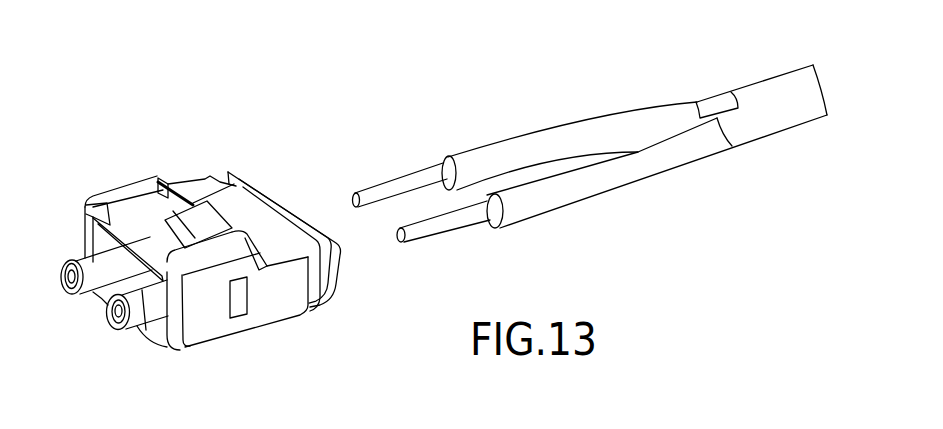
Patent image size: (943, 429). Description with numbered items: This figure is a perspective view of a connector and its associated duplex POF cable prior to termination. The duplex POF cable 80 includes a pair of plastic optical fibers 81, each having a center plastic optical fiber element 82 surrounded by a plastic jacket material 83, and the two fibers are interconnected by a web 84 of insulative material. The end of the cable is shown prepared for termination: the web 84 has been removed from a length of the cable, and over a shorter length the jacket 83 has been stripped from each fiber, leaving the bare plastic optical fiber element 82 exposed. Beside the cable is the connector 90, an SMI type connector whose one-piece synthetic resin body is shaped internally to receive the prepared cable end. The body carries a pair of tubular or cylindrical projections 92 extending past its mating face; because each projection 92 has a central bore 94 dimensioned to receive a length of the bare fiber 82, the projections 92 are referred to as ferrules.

The duplex POF cable 80 is at (776, 133).
The plastic optical fiber 81 is at (637, 168).
The plastic optical fiber element 82 is at (378, 187).
The plastic jacket material 83 is at (440, 164).
The web 84 is at (738, 104).
The connector 90 is at (178, 152).
The tubular projections (ferrules) 92 is at (97, 265).
The central bore 94 is at (67, 283).